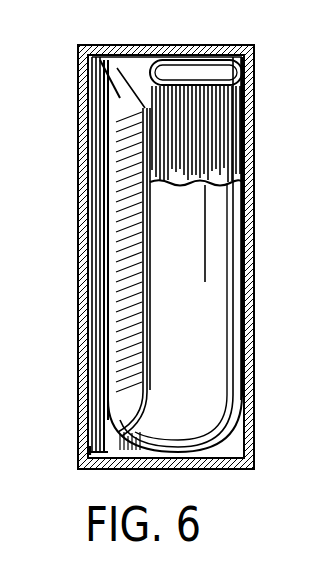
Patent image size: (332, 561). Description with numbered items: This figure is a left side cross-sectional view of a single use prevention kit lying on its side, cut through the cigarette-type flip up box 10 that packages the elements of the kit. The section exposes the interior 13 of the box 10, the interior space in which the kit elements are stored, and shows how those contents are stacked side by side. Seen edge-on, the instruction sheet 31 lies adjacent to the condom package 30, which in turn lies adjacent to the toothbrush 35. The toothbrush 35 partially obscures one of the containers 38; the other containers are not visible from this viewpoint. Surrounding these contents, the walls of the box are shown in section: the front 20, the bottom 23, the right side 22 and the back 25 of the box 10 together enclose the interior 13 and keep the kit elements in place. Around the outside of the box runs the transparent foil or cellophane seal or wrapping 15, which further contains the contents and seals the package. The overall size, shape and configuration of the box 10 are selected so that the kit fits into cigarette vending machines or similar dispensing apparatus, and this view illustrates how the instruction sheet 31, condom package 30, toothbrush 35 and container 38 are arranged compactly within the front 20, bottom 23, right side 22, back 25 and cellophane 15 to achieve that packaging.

The flip up box 10 is at (254, 386).
The interior space 13 is at (78, 62).
The cellophane seal 15 is at (77, 98).
The front of box 20 is at (254, 200).
The right side of box 22 is at (150, 45).
The bottom of box 23 is at (210, 469).
The back of box 25 is at (78, 290).
The condom package 30 is at (125, 214).
The instruction sheet 31 is at (95, 424).
The toothbrush 35 is at (252, 60).
The container 38 is at (203, 325).